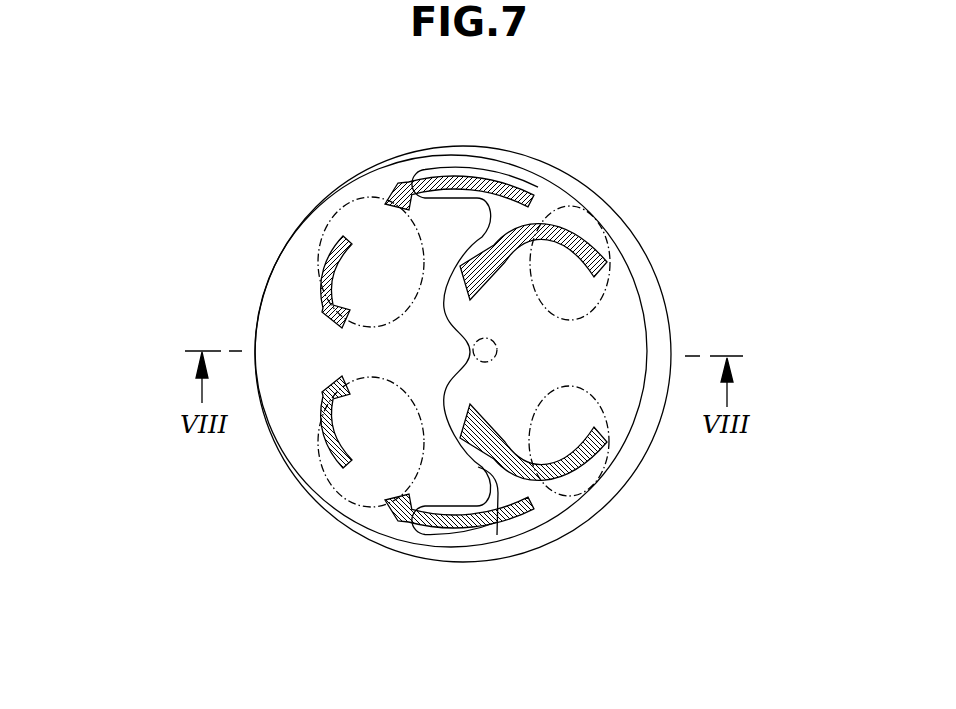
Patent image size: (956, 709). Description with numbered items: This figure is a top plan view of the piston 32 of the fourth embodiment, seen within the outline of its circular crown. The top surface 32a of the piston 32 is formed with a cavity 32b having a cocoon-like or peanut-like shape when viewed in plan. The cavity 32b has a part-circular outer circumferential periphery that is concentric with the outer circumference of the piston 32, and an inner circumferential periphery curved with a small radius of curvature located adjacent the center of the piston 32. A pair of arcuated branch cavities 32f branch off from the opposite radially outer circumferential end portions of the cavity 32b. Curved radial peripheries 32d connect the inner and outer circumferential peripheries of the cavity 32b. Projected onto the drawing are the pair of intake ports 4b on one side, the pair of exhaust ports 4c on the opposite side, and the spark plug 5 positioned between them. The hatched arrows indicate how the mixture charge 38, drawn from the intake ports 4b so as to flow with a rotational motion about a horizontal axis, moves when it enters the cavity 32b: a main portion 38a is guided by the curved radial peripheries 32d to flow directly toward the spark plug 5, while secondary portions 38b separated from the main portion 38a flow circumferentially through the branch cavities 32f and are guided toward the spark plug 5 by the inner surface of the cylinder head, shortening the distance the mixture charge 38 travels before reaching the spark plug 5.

The piston 32 is at (616, 208).
The top surface 32a is at (405, 173).
The cavity 32b is at (622, 320).
The curved radial peripheries 32d is at (497, 193).
The arcuated branch cavities 32f is at (468, 168).
The intake ports 4b is at (318, 250).
The exhaust ports 4c is at (613, 257).
The spark plug 5 is at (497, 345).
The mixture charge 38 is at (517, 527).
The main portion 38a is at (578, 470).
The secondary portions 38b is at (480, 552).